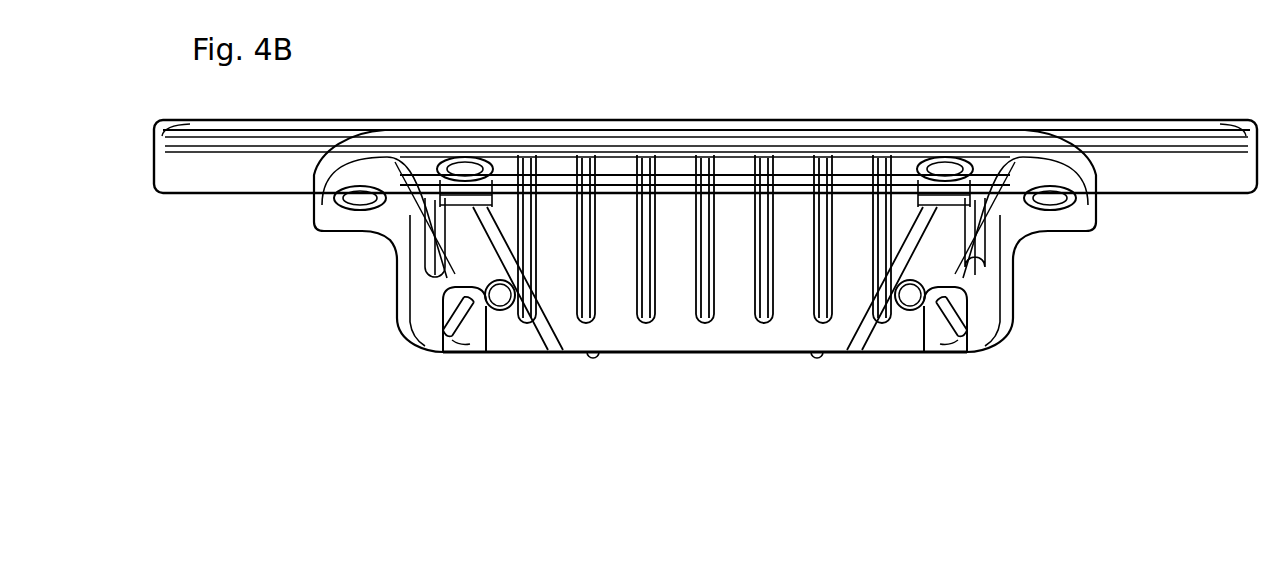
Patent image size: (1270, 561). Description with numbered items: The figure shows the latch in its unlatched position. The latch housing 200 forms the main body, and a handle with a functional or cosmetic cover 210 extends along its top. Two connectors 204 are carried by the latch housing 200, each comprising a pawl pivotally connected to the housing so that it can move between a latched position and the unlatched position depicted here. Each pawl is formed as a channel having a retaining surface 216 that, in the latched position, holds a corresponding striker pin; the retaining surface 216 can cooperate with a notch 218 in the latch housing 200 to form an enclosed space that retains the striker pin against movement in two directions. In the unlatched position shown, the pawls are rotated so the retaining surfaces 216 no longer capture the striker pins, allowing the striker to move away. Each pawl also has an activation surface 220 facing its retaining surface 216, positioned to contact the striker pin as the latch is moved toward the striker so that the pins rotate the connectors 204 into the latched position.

The latch housing 200 is at (660, 325).
The connector 204 is at (457, 307).
The cover 210 is at (1123, 143).
The retaining surface 216 is at (487, 352).
The notch 218 is at (468, 343).
The activation surface 220 is at (450, 337).